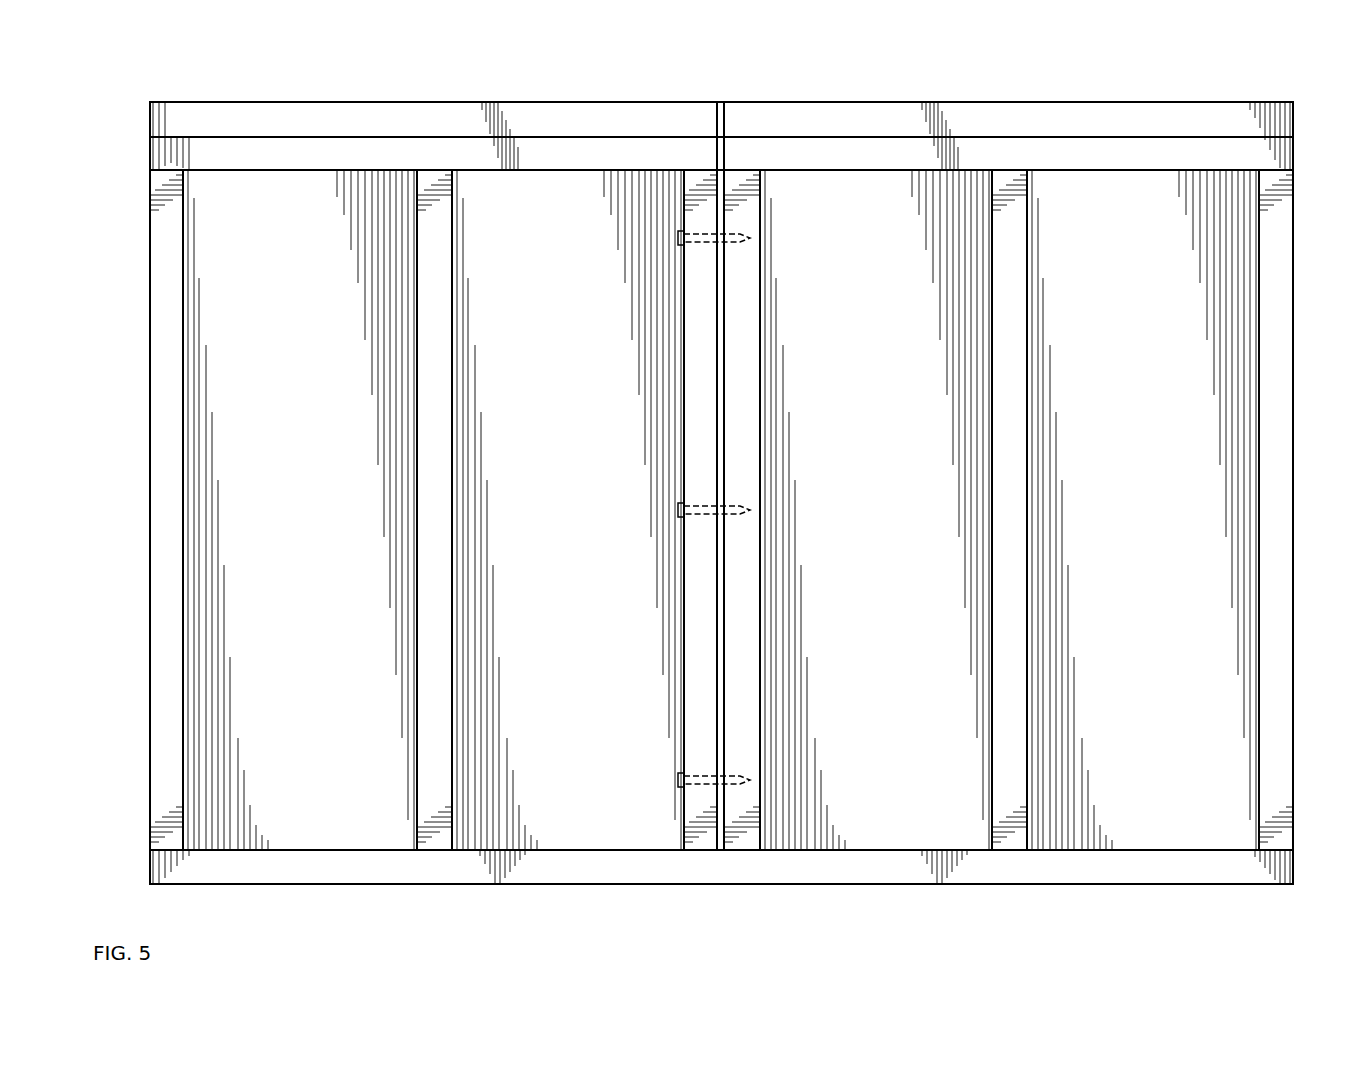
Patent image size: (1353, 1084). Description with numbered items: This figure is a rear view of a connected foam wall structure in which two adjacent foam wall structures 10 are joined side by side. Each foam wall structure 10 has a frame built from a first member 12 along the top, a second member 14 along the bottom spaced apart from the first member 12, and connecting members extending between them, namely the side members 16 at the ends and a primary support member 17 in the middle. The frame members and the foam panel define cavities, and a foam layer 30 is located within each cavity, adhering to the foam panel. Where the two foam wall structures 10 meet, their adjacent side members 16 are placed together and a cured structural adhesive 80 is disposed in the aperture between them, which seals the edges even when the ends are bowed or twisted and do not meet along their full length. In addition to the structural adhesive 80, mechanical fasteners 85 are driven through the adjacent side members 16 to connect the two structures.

The foam wall structure 10 is at (320, 92).
The first member 12 is at (593, 102).
The second member 14 is at (355, 884).
The side member 16 is at (150, 727).
The primary support member 17 is at (450, 780).
The foam layer 30 is at (302, 516).
The cured structural adhesive 80 is at (722, 212).
The mechanical fastener 85 is at (703, 233).